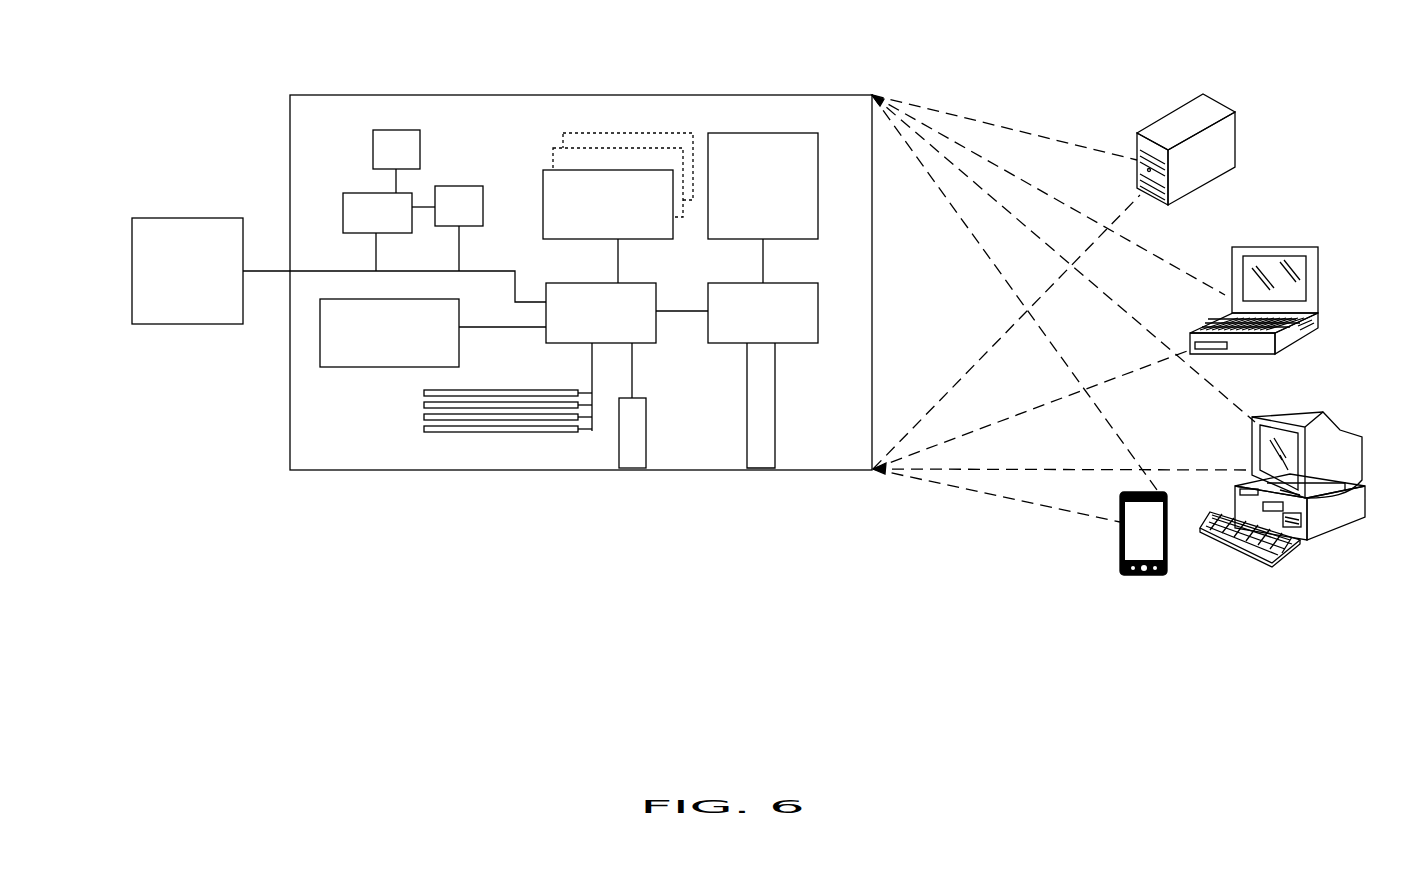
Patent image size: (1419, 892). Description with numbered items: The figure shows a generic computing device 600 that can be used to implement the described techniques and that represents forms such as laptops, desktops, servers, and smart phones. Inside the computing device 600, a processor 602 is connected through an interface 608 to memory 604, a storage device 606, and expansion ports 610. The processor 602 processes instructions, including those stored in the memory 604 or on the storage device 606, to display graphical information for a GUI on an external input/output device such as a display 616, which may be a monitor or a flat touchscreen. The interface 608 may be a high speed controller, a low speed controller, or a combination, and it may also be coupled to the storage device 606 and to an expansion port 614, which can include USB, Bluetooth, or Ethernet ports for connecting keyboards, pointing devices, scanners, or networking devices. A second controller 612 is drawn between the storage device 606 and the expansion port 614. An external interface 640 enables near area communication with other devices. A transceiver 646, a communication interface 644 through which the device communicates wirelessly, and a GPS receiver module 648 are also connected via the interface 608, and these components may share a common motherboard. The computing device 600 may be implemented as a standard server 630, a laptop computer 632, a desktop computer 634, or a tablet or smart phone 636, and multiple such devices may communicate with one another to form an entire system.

The computing device 600 is at (272, 98).
The processor 602 is at (389, 333).
The memory 604 is at (618, 186).
The storage device 606 is at (763, 186).
The interface 608 is at (601, 313).
The expansion ports 610 is at (424, 417).
The interface controller 612 is at (763, 313).
The expansion port 614 is at (747, 412).
The display 616 is at (187, 271).
The standard server 630 is at (1168, 128).
The laptop computer 632 is at (1287, 247).
The desktop computer 634 is at (1352, 432).
The smart phone 636 is at (1120, 548).
The external interface 640 is at (648, 399).
The communication interface 644 is at (377, 213).
The transceiver 646 is at (373, 152).
The GPS receiver module 648 is at (457, 186).